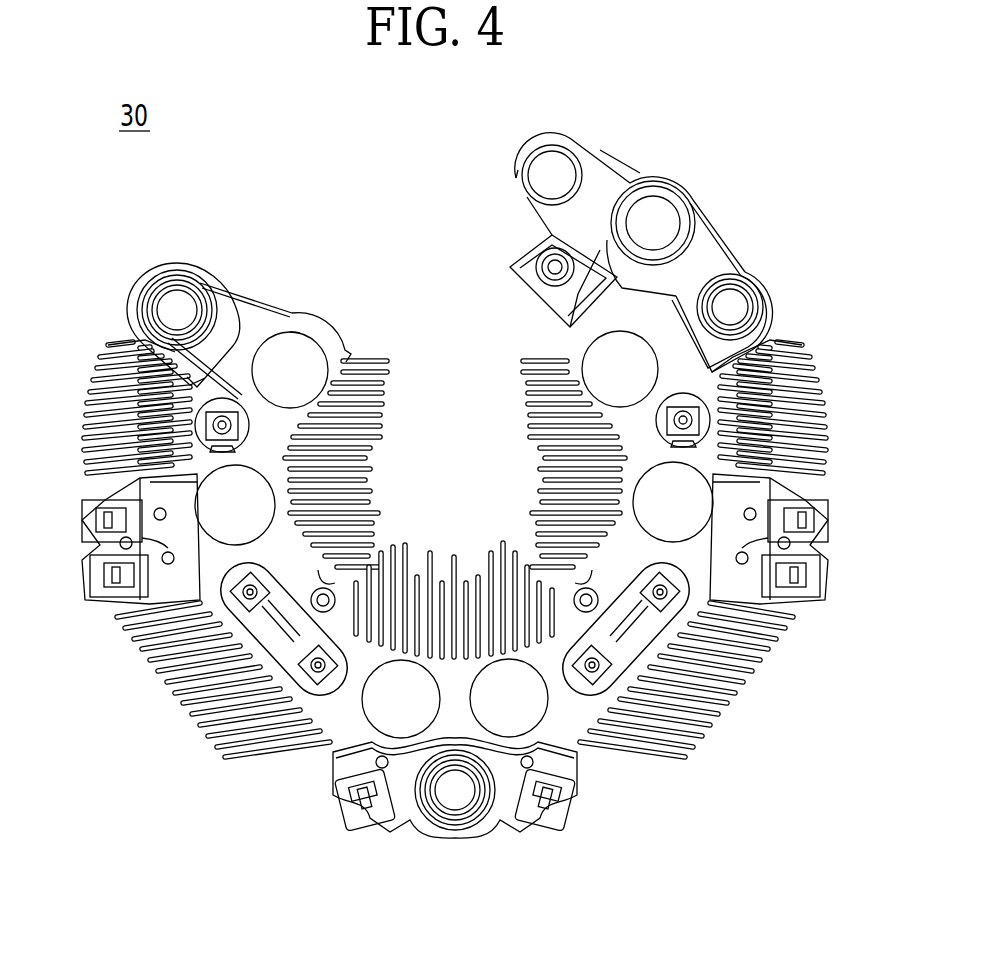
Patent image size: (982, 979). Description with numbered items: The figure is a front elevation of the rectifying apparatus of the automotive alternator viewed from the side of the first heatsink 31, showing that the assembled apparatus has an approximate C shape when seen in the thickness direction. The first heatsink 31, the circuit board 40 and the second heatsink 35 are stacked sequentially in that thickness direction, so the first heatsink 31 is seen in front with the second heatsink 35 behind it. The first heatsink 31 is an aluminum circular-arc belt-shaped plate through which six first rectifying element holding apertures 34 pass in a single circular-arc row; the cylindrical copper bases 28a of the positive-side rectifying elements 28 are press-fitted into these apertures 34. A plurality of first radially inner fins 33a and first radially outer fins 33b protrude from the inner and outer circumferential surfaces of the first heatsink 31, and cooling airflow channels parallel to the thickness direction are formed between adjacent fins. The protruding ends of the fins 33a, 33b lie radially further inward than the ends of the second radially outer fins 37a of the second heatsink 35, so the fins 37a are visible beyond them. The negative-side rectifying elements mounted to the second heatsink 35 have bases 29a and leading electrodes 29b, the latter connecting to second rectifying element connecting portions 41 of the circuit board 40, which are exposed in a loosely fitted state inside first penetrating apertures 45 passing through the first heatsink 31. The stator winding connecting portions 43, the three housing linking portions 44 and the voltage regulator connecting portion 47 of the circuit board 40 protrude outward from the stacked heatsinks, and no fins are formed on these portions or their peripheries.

The positive-side rectifying element 28 is at (280, 342).
The base 28a is at (302, 340).
The base 29a is at (235, 615).
The leading electrode 29b is at (245, 585).
The first heatsink 31 is at (343, 324).
The first radially inner fin 33a is at (405, 552).
The first radially outer fin 33b is at (263, 710).
The first rectifying element holding aperture 34 is at (595, 358).
The second heatsink 35 is at (661, 780).
The second radially outer fin 37a is at (195, 727).
The circuit board 40 is at (648, 637).
The second rectifying element connecting portion 41 is at (677, 597).
The stator winding connecting portion 43 is at (335, 818).
The housing linking portion 44 is at (140, 292).
The first penetrating aperture 45 is at (647, 647).
The voltage regulator connecting portion 47 is at (522, 253).